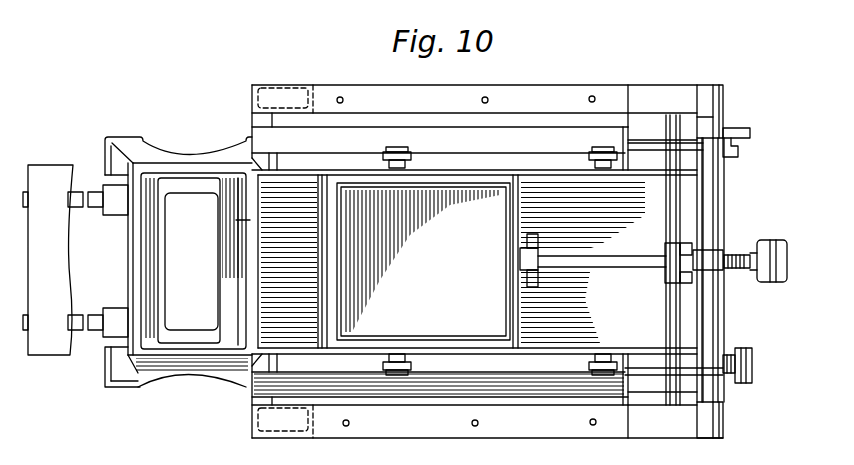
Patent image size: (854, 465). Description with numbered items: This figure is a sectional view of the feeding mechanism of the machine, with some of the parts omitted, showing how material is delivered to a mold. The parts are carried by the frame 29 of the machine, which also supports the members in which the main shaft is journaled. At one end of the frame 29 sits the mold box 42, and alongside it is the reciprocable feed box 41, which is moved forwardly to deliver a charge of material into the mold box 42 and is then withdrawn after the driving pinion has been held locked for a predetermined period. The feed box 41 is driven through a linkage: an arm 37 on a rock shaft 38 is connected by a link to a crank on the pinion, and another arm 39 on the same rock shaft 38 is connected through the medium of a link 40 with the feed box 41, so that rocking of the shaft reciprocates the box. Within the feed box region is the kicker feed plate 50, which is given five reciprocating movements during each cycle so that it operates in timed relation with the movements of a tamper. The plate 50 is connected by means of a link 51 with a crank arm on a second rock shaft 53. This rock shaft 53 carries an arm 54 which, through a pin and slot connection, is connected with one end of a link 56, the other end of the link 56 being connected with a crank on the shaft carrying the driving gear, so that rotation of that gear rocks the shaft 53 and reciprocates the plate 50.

The frame 29 is at (586, 93).
The arm 37 is at (768, 349).
The rock shaft 38 is at (723, 390).
The arm 39 is at (742, 255).
The link 40 is at (742, 272).
The feed box 41 is at (320, 288).
The mold box 42 is at (128, 345).
The kicker feed plate 50 is at (337, 296).
The link 51 is at (589, 268).
The rock shaft 53 is at (719, 193).
The arm 54 is at (740, 131).
The link 56 is at (688, 153).